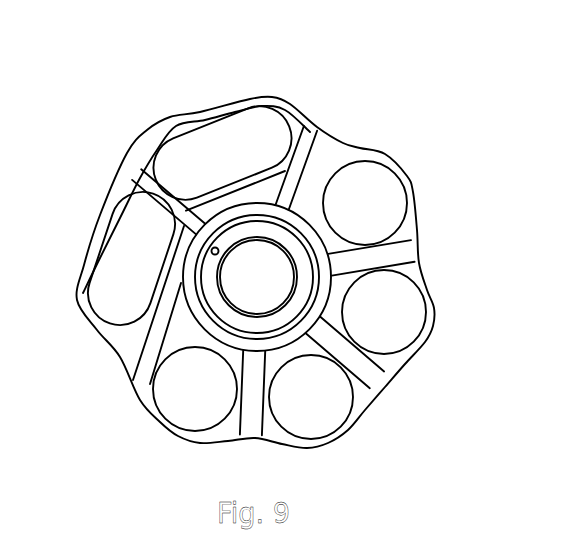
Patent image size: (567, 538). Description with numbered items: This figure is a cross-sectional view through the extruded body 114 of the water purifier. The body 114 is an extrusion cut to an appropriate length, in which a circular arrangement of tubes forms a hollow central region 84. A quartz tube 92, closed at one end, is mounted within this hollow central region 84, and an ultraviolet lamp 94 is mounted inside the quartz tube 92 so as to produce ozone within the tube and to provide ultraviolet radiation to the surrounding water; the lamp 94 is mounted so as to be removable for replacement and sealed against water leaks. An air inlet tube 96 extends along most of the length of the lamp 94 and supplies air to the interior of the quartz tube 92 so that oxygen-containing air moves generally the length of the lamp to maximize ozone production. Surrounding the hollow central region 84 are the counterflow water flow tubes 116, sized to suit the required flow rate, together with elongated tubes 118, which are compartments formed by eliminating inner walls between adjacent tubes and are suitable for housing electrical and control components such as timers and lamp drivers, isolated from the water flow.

The hollow central region 84 is at (326, 267).
The quartz tube 92 is at (278, 203).
The ultraviolet lamp 94 is at (262, 242).
The air inlet tube 96 is at (145, 370).
The body 114 is at (445, 251).
The water flow tubes 116 is at (373, 212).
The elongated tubes 118 is at (210, 164).